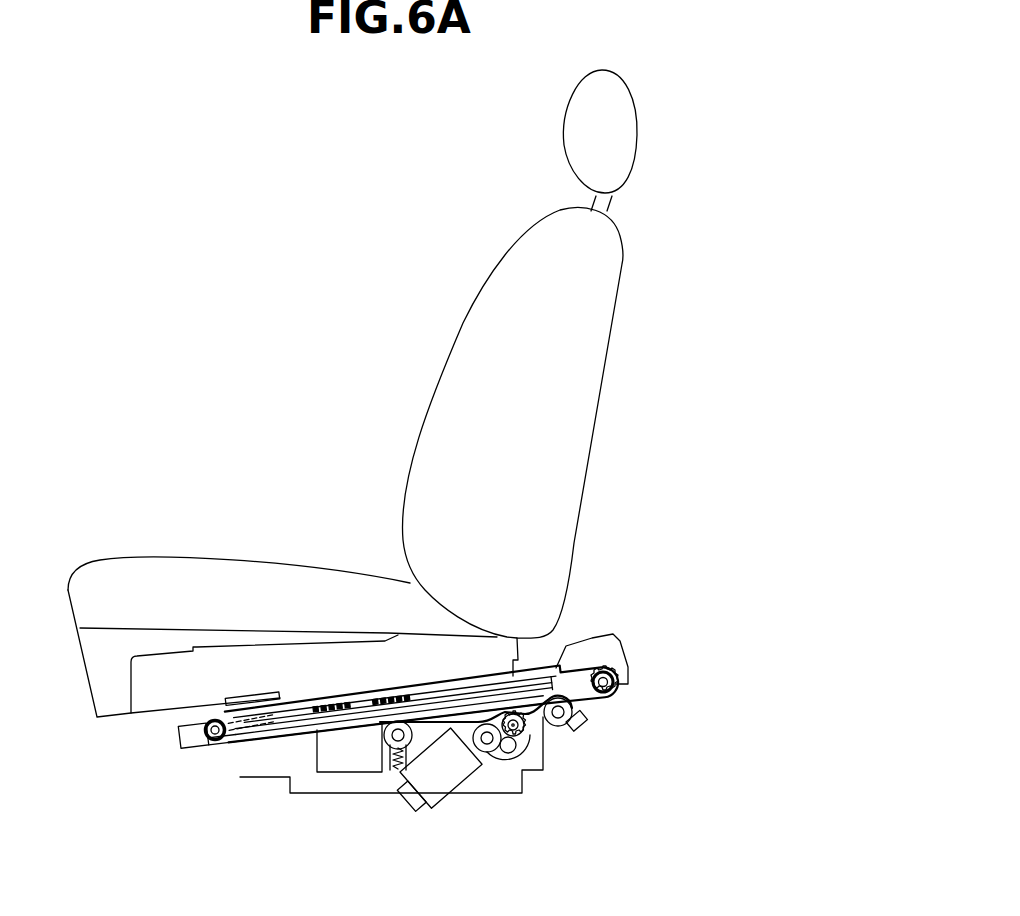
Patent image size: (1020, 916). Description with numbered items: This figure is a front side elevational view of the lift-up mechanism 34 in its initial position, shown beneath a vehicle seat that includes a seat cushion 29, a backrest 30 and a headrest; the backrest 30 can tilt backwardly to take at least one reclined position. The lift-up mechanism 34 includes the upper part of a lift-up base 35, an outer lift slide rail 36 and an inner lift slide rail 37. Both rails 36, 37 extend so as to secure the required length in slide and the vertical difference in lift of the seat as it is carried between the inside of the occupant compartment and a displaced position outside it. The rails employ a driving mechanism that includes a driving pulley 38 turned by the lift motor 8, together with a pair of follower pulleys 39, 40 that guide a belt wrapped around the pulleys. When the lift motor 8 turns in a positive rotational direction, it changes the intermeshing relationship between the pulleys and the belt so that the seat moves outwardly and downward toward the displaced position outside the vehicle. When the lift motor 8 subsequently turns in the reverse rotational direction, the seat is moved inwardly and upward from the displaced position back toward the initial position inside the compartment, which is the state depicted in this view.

The lift motor 8 is at (458, 775).
The seat cushion 29 is at (203, 570).
The backrest 30 is at (437, 440).
The lift-up mechanism 34 is at (608, 719).
The lift-up base 35 is at (347, 775).
The outer lift slide rail 36 is at (495, 690).
The inner lift slide rail 37 is at (183, 733).
The driving pulley 38 is at (540, 722).
The follower pulley 39 is at (273, 742).
The follower pulley 40 is at (219, 719).